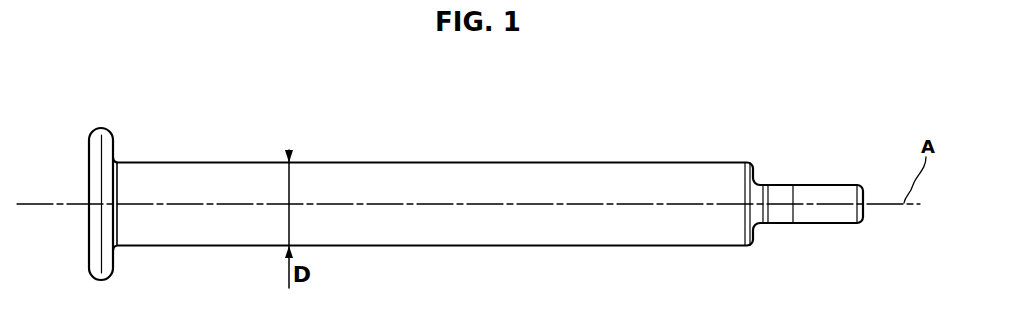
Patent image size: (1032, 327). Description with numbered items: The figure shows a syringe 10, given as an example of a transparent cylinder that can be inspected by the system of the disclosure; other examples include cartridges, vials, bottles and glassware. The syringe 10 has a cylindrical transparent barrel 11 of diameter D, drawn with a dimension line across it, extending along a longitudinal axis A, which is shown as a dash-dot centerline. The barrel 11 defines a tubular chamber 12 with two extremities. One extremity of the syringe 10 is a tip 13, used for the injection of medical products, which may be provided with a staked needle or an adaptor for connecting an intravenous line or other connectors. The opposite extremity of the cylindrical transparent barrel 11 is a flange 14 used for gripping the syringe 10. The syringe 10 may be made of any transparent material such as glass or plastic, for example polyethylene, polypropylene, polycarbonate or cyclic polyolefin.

The syringe 10 is at (633, 109).
The cylindrical transparent barrel 11 is at (342, 160).
The tubular chamber 12 is at (487, 181).
The tip 13 is at (824, 193).
The flange 14 is at (112, 130).